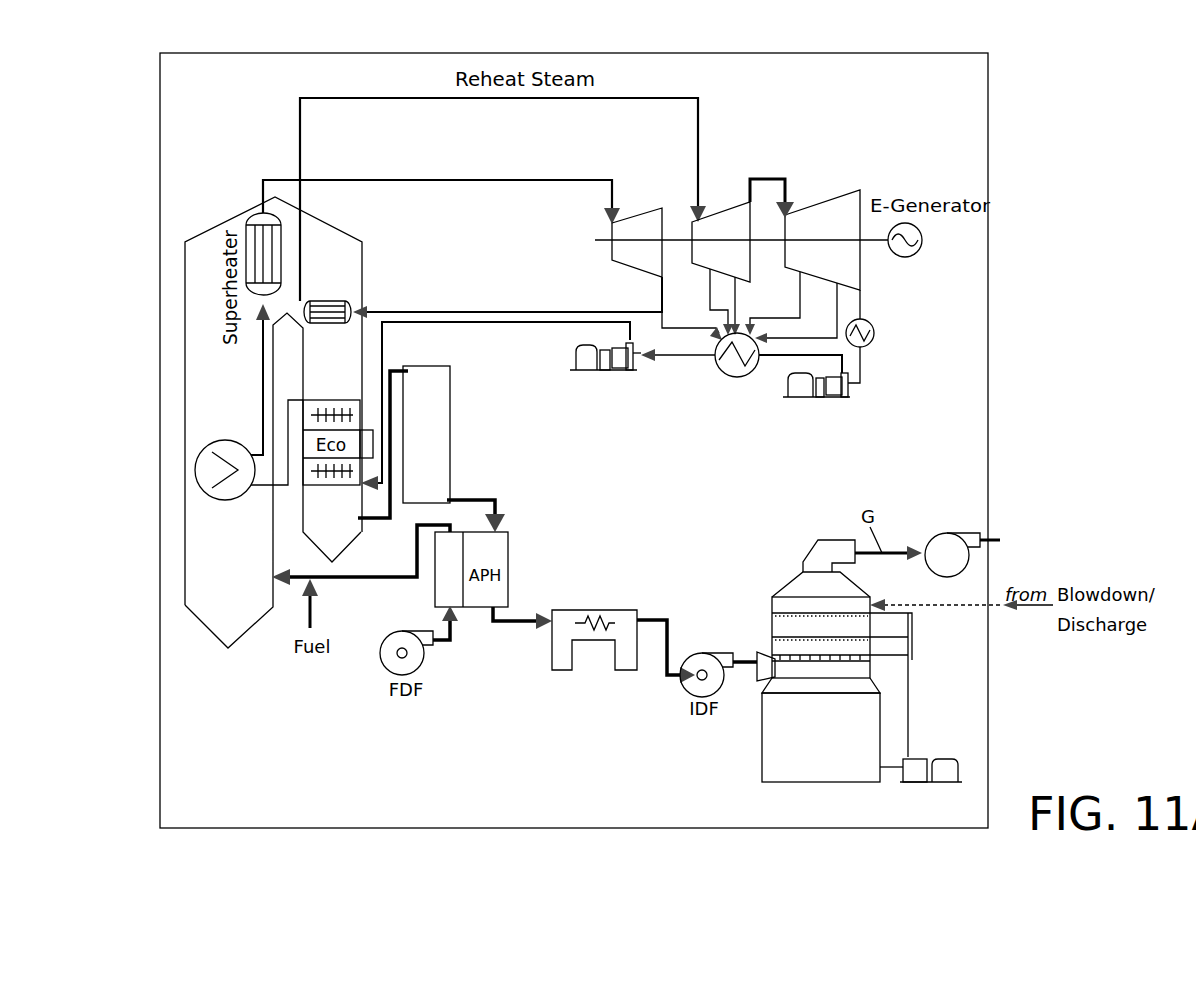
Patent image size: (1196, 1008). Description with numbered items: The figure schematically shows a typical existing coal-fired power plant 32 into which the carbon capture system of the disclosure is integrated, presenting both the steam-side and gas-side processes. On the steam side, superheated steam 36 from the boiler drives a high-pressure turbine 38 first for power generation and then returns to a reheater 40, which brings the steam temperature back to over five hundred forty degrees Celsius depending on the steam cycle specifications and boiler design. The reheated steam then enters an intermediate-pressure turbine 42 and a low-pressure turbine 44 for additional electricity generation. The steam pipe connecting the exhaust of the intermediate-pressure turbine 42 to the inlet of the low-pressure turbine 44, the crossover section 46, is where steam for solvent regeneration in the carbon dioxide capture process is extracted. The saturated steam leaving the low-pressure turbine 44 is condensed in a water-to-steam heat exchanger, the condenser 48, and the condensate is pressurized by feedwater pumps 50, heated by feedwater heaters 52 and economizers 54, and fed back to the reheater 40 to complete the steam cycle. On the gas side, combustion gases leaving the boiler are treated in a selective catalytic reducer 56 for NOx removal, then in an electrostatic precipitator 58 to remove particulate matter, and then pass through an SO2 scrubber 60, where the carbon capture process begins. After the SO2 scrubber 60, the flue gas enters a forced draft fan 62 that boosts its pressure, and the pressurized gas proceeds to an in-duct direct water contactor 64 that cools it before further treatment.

The coal-fired power plant 32 is at (460, 53).
The superheated steam 36 is at (590, 178).
The high-pressure turbine 38 is at (645, 212).
The reheater 40 is at (356, 300).
The intermediate-pressure turbine 42 is at (722, 212).
The low-pressure turbine 44 is at (826, 200).
The crossover section 46 is at (767, 178).
The condenser 48 is at (862, 318).
The feedwater pump 50 is at (598, 372).
The feedwater heater 52 is at (718, 373).
The economizer 54 is at (352, 410).
The selective catalytic reducer 56 is at (450, 413).
The electrostatic precipitator 58 is at (612, 610).
The SO2 scrubber 60 is at (762, 748).
The forced draft fan 62 is at (952, 533).
The in-duct direct water contactor 64 is at (1043, 540).